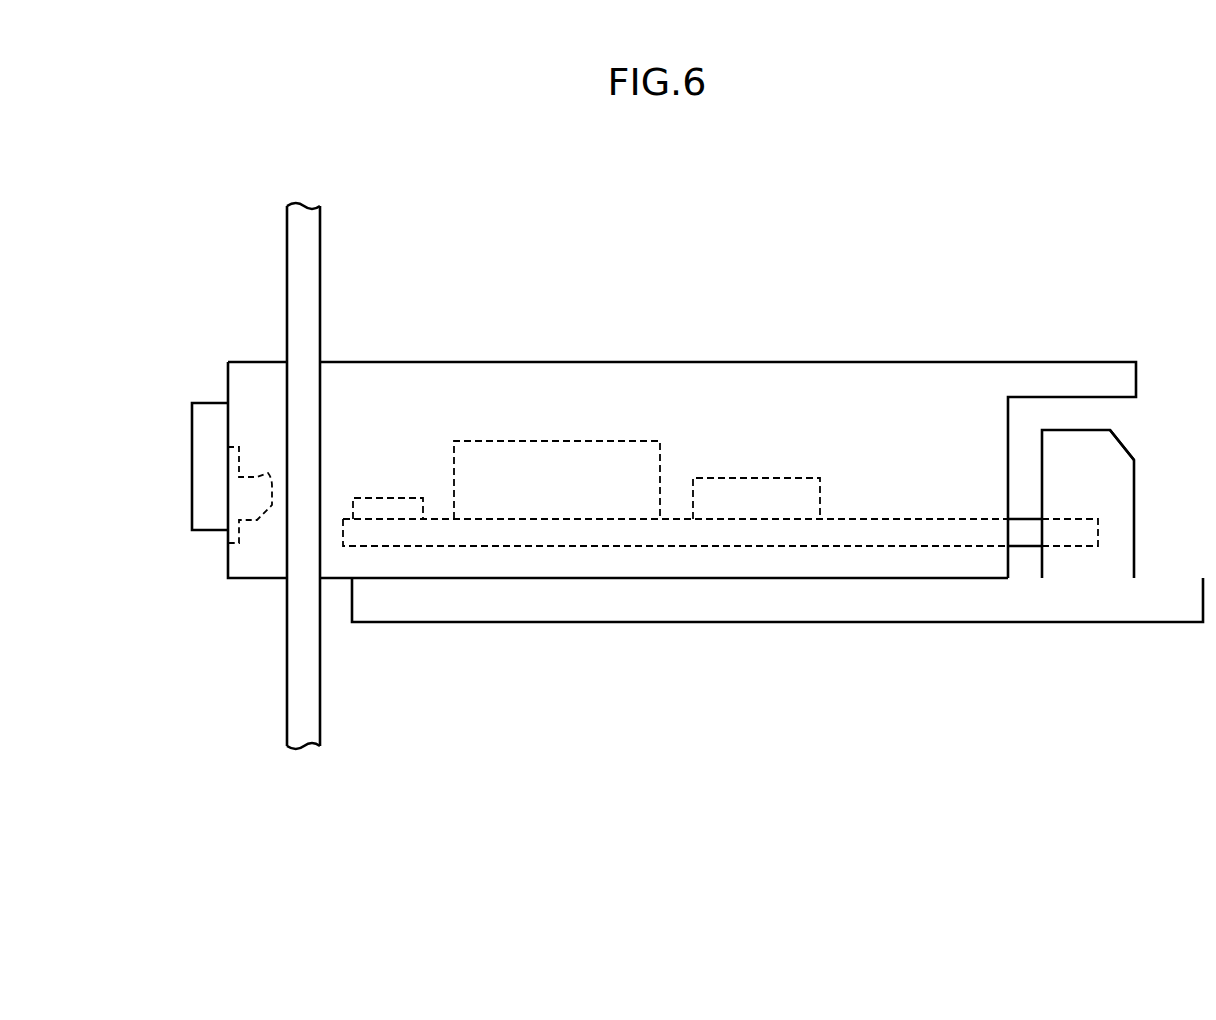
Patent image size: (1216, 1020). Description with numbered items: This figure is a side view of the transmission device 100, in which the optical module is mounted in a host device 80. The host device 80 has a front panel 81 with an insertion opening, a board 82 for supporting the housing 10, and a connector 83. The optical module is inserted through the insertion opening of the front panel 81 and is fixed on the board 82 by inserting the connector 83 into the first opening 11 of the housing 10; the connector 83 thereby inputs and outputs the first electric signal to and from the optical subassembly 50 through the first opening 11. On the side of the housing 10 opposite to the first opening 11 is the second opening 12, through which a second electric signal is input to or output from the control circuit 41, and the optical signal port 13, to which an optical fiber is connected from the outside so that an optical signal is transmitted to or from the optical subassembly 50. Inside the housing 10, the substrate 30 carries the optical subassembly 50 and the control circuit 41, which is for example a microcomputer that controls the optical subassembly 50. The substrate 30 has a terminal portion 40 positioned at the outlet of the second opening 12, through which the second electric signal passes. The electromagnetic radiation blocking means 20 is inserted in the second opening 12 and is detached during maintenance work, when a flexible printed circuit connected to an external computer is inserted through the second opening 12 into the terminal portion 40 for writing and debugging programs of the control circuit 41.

The host device 80 is at (878, 182).
The front panel 81 is at (310, 250).
The board 82 is at (851, 602).
The connector 83 is at (1120, 545).
The housing 10 is at (492, 377).
The first opening 11 is at (1108, 492).
The second opening 12 is at (220, 498).
The optical signal port 13 is at (203, 402).
The electromagnetic radiation blocking means 20 is at (266, 470).
The substrate 30 is at (928, 517).
The terminal portion 40 is at (402, 497).
The control circuit 41 is at (786, 477).
The optical subassembly 50 is at (600, 440).
The transmission device 100 is at (359, 778).